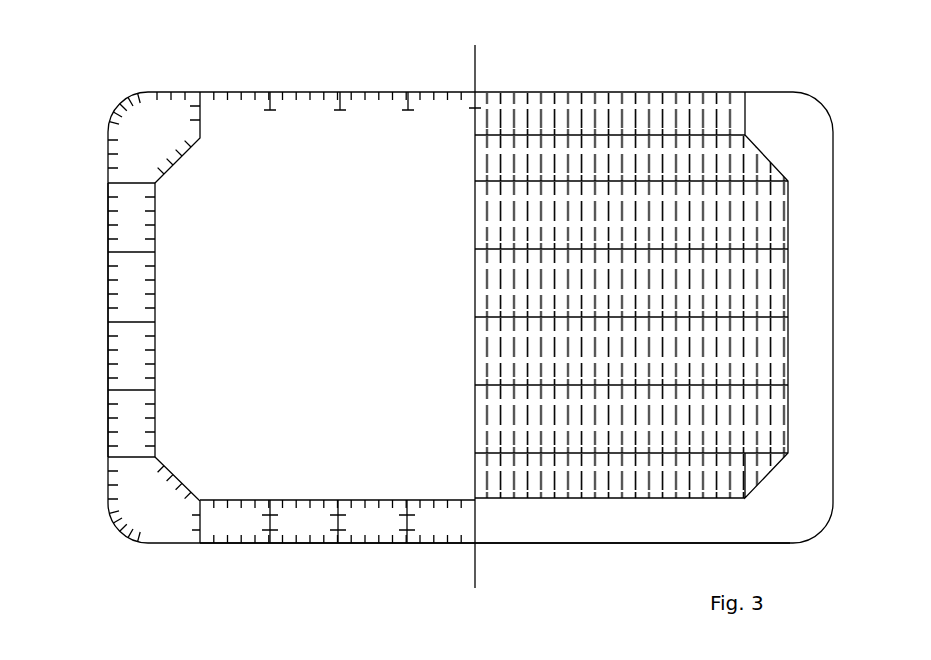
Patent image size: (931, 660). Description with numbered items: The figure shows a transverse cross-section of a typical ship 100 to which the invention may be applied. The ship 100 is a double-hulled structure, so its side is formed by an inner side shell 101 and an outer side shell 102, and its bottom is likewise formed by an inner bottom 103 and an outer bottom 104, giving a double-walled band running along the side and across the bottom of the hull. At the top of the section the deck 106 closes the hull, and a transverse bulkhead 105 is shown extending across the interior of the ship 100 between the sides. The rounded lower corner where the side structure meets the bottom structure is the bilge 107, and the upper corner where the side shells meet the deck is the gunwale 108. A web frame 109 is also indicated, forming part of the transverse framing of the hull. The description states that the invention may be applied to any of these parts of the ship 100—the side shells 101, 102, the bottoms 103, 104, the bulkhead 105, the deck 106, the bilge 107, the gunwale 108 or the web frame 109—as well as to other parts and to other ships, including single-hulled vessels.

The ship 100 is at (333, 80).
The inner side shell 101 is at (155, 307).
The outer side shell 102 is at (108, 302).
The inner bottom 103 is at (335, 500).
The outer bottom 104 is at (291, 545).
The transverse bulkhead 105 is at (508, 330).
The deck 106 is at (584, 92).
The bilge 107 is at (110, 518).
The gunwale 108 is at (121, 110).
The web frame 109 is at (612, 522).